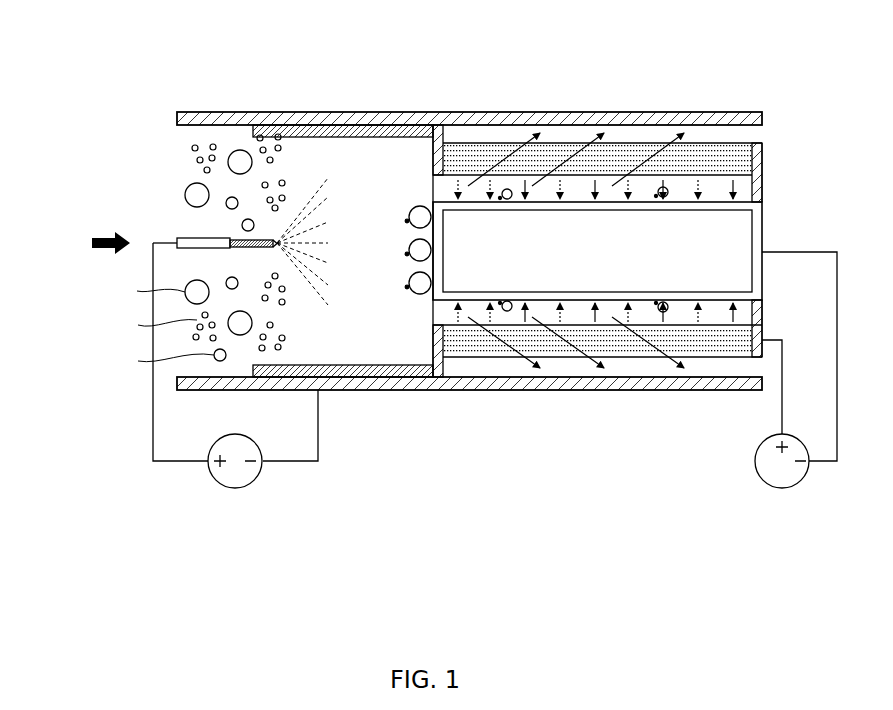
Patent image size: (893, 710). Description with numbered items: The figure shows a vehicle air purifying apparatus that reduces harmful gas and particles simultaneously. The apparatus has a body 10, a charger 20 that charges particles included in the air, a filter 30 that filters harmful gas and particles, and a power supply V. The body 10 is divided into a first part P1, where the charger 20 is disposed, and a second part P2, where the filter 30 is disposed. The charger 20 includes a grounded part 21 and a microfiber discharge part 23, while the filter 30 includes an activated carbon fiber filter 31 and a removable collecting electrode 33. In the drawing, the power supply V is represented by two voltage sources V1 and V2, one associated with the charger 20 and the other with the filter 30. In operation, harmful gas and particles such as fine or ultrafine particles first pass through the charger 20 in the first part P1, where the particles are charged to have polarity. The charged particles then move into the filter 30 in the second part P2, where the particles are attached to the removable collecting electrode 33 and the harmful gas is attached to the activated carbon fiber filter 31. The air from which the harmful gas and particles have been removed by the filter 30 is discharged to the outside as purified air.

The body 10 is at (620, 58).
The charger 20 is at (135, 175).
The grounded part 21 is at (253, 131).
The microfiber discharge part 23 is at (188, 237).
The filter 30 is at (630, 251).
The activated carbon fiber filter 31 is at (740, 162).
The removable collecting electrode 33 is at (757, 225).
The first part P1 is at (337, 110).
The second part P2 is at (626, 110).
The first power supply V1 is at (233, 488).
The second power supply V2 is at (778, 488).
The power supply V is at (757, 534).